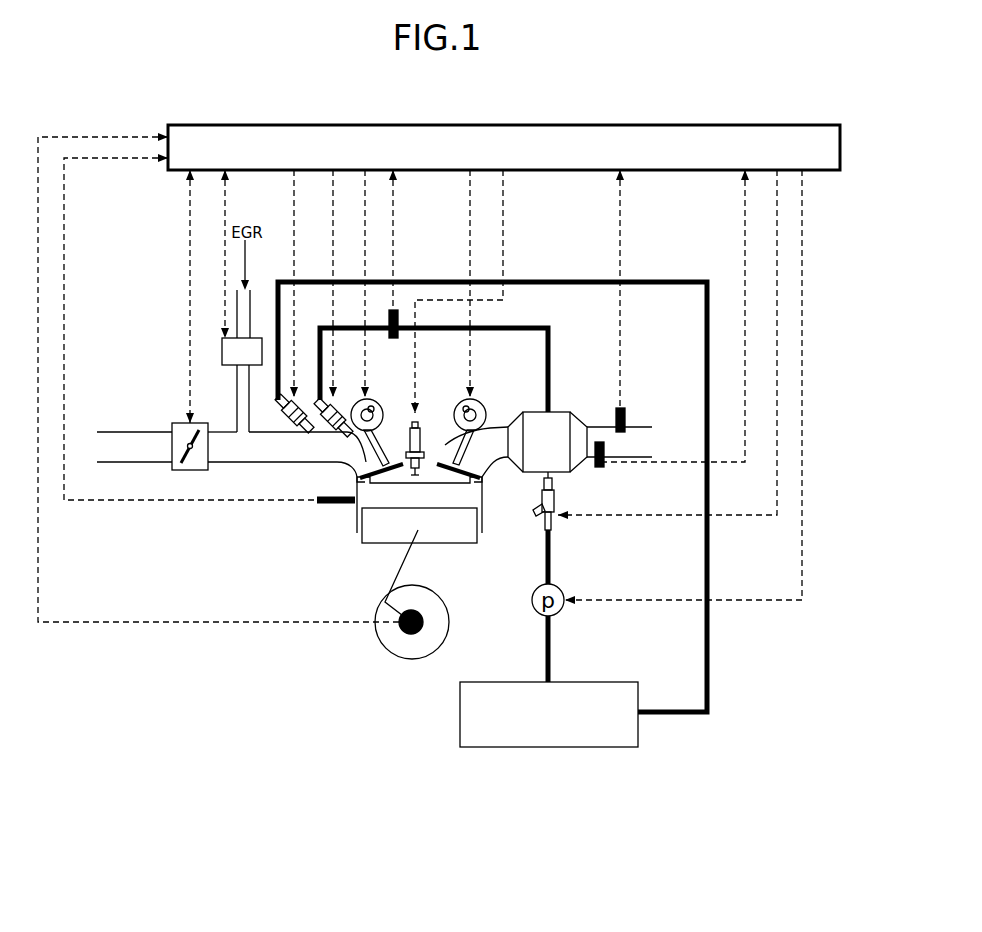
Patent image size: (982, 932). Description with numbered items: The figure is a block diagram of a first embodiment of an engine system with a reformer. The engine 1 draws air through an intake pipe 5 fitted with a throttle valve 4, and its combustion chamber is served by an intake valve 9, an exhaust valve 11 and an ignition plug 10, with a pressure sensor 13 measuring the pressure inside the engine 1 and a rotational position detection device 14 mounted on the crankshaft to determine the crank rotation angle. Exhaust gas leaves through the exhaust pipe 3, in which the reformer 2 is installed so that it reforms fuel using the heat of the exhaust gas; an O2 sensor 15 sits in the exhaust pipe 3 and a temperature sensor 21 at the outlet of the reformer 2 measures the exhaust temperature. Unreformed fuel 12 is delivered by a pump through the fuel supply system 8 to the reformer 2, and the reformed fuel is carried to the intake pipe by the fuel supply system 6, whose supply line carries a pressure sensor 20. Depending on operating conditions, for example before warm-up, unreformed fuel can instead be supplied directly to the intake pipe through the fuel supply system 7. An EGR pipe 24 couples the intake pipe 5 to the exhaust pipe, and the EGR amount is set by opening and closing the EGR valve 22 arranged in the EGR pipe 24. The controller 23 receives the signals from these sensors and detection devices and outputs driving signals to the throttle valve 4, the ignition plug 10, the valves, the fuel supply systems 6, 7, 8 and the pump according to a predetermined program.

The engine 1 is at (476, 543).
The reformer 2 is at (560, 415).
The exhaust pipe 3 is at (650, 430).
The throttle valve 4 is at (188, 428).
The intake pipe 5 is at (117, 432).
The fuel supply system for reformed fuel 6 is at (340, 442).
The fuel supply system for unreformed fuel 7 is at (300, 440).
The fuel supply system for unreformed fuel to reformer 8 is at (540, 496).
The intake valve 9 is at (363, 400).
The ignition plug 10 is at (423, 430).
The exhaust valve 11 is at (485, 412).
The unreformed fuel 12 is at (549, 750).
The pressure sensor 13 is at (327, 505).
The rotational position detection device 14 is at (412, 635).
The O2 sensor 15 is at (627, 408).
The pressure sensor 20 is at (393, 340).
The temperature sensor 21 is at (604, 465).
The EGR valve 22 is at (222, 352).
The controller 23 is at (645, 125).
The EGR pipe 24 is at (250, 305).